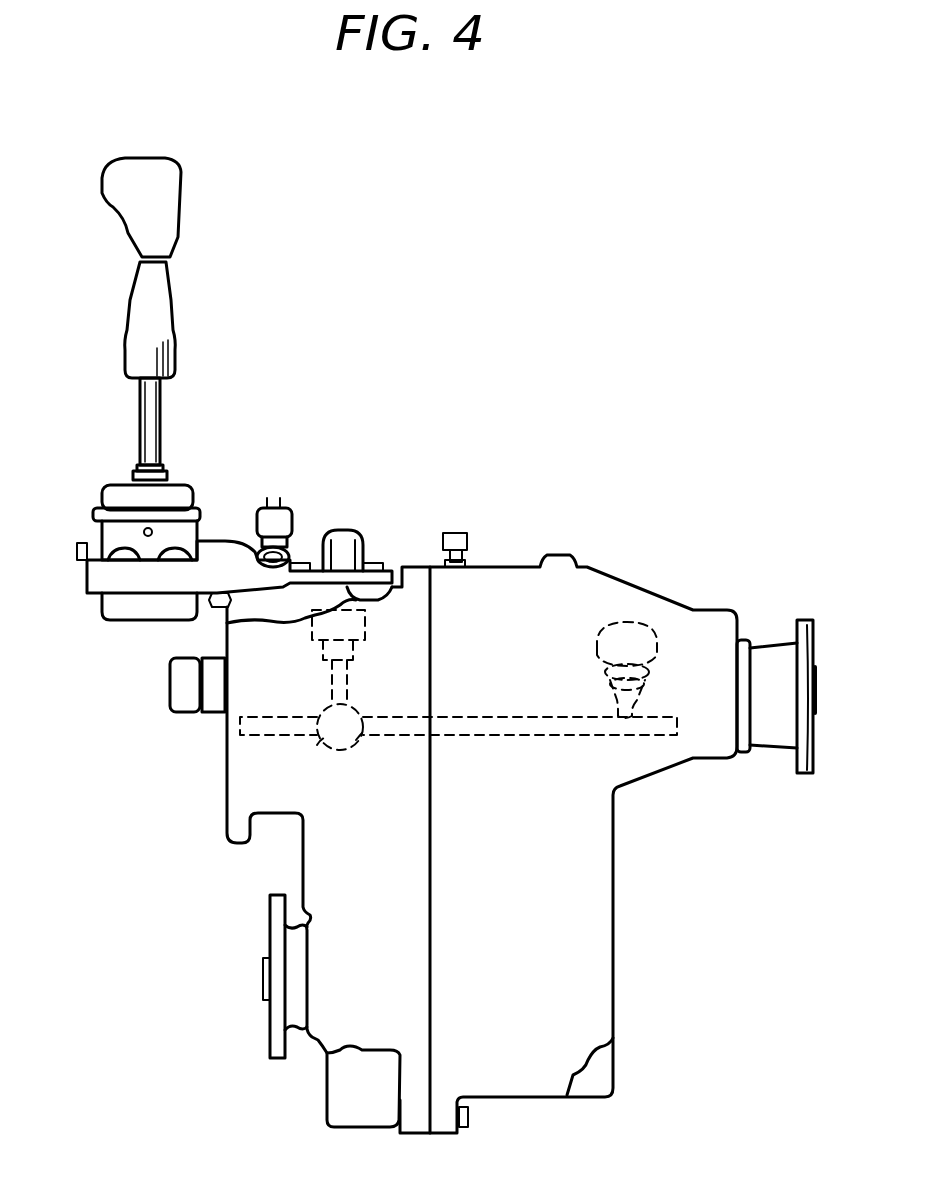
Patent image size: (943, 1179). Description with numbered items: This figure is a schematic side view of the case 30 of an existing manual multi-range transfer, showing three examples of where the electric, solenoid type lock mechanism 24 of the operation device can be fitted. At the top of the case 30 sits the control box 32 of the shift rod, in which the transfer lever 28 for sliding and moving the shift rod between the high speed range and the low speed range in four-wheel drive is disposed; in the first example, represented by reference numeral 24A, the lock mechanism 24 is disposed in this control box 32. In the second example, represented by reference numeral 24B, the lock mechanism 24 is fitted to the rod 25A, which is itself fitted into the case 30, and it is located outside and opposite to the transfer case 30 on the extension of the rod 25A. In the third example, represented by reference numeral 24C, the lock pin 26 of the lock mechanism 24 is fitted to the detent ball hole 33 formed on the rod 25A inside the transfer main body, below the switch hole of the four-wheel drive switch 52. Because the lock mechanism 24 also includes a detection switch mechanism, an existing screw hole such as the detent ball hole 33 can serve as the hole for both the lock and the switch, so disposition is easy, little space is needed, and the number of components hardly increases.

The transfer lever 28 is at (160, 313).
The lock mechanism 24 is at (263, 516).
The first disposition position of lock mechanism 24A is at (296, 503).
The second disposition position of lock mechanism 24B is at (634, 608).
The third disposition position of lock mechanism 24C is at (378, 620).
The control box 32 is at (348, 525).
The case 30 is at (587, 568).
The lock pin 26 is at (333, 688).
The rod 25A is at (500, 713).
The four-wheel drive switch 52 is at (323, 747).
The detent ball hole 33 is at (350, 730).